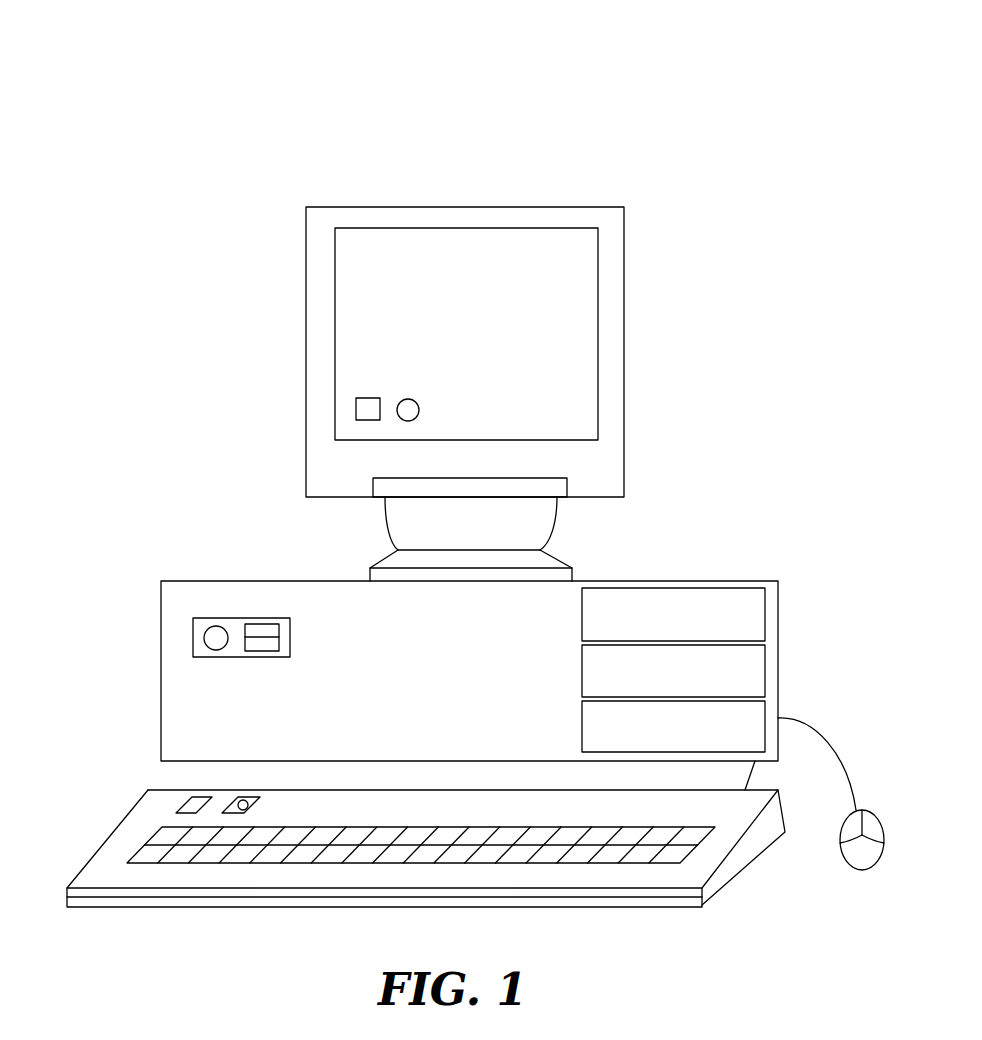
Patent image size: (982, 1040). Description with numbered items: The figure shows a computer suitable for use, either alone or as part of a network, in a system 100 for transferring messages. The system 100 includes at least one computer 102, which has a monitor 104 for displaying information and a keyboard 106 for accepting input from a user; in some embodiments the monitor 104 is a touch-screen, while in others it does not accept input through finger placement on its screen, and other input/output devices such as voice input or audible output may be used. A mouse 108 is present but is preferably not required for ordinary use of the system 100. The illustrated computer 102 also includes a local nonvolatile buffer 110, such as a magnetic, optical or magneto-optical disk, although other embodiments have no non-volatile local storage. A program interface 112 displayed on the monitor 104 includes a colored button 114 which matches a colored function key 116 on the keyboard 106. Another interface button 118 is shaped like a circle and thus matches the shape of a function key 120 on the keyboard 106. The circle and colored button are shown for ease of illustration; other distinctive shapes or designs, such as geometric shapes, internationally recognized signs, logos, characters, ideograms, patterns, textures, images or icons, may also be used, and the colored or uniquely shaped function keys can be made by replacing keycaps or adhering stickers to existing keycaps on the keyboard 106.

The system 100 is at (464, 461).
The computer 102 is at (531, 640).
The monitor 104 is at (426, 391).
The keyboard 106 is at (405, 789).
The mouse 108 is at (822, 816).
The local nonvolatile buffer 110 is at (740, 728).
The program interface 112 is at (352, 321).
The colored button 114 is at (248, 384).
The colored function key 116 is at (122, 770).
The interface button 118 is at (265, 343).
The function key 120 is at (163, 742).